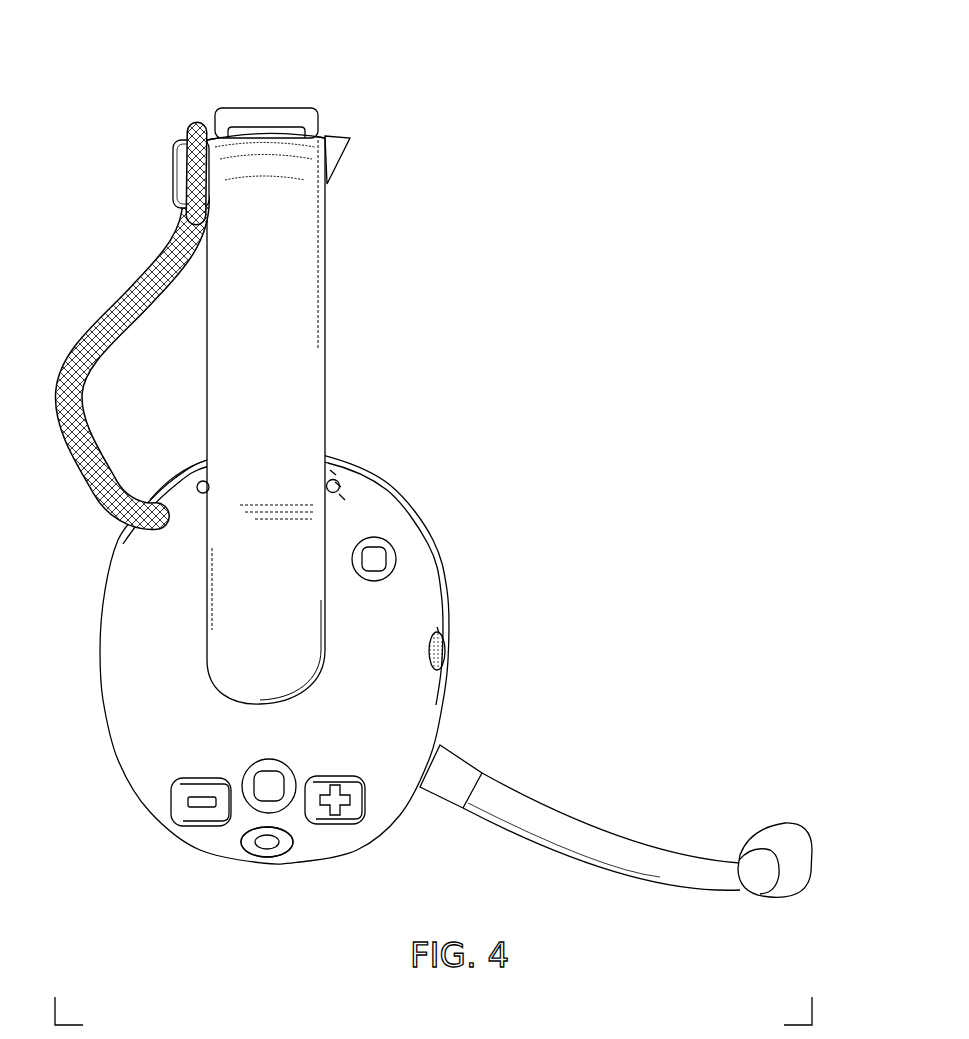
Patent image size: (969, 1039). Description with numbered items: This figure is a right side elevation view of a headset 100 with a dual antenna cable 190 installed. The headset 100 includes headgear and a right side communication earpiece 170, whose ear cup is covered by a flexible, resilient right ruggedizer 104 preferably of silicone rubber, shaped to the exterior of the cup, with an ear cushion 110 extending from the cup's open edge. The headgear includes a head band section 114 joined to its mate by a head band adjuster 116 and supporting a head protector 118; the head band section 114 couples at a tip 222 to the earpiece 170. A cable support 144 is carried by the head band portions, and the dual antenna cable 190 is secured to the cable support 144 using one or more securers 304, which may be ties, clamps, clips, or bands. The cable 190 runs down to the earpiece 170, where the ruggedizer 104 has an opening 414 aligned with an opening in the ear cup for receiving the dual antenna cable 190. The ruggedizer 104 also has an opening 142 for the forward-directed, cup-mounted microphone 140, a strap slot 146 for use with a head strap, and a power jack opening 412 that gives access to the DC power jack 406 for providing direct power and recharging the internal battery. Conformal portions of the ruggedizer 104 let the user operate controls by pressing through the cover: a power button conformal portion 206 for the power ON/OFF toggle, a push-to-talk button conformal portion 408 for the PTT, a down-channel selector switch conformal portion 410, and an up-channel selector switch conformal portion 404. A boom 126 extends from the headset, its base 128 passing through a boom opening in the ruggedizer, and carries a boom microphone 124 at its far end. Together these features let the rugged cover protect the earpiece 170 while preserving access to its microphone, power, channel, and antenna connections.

The headset 100 is at (626, 42).
The right ruggedizer 104 is at (383, 515).
The ear cushion 110 is at (352, 458).
The head band section 114 is at (303, 240).
The head band adjuster 116 is at (257, 108).
The head protector 118 is at (333, 138).
The boom microphone 124 is at (773, 840).
The boom 126 is at (513, 798).
The base of boom 128 is at (460, 760).
The forward-directed microphone 140 is at (447, 639).
The opening 142 is at (438, 625).
The cable support 144 is at (173, 150).
The strap slot 146 is at (333, 478).
The right side communication earpiece 170 is at (616, 571).
The dual antenna cable 190 is at (168, 266).
The power button conformal portion 206 is at (390, 544).
The tip 222 is at (272, 648).
The securer 304 is at (204, 122).
The up-channel selector switch conformal portion 404 is at (353, 815).
The DC power jack 406 is at (267, 848).
The push-to-talk button conformal portion 408 is at (275, 760).
The down-channel selector switch conformal portion 410 is at (218, 778).
The power jack opening 412 is at (242, 838).
The opening 414 is at (164, 514).